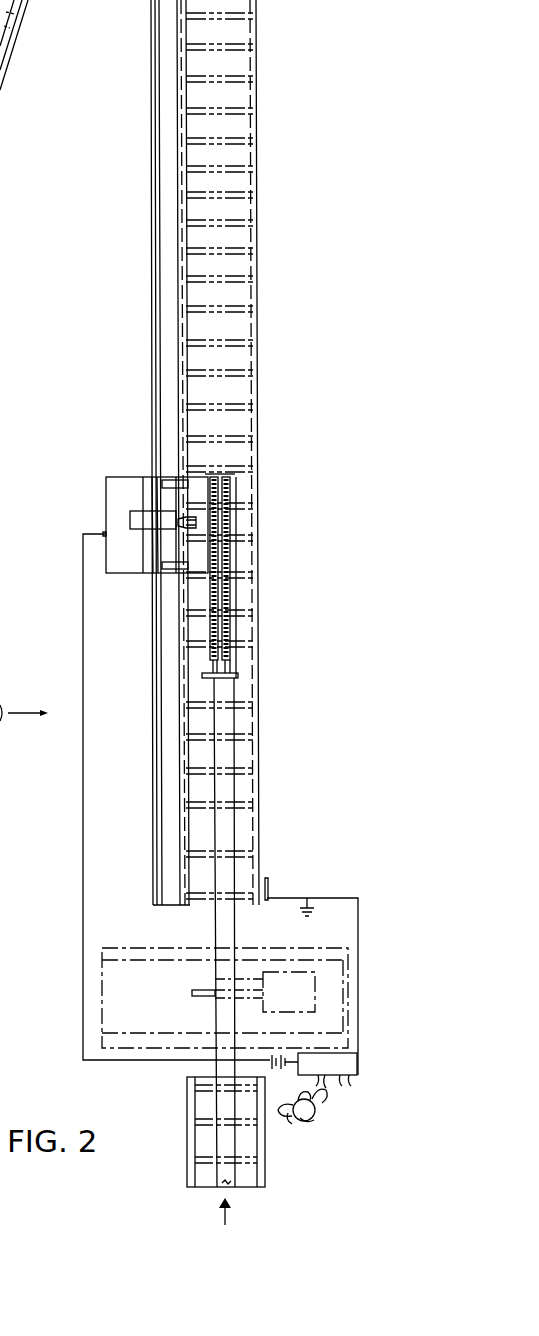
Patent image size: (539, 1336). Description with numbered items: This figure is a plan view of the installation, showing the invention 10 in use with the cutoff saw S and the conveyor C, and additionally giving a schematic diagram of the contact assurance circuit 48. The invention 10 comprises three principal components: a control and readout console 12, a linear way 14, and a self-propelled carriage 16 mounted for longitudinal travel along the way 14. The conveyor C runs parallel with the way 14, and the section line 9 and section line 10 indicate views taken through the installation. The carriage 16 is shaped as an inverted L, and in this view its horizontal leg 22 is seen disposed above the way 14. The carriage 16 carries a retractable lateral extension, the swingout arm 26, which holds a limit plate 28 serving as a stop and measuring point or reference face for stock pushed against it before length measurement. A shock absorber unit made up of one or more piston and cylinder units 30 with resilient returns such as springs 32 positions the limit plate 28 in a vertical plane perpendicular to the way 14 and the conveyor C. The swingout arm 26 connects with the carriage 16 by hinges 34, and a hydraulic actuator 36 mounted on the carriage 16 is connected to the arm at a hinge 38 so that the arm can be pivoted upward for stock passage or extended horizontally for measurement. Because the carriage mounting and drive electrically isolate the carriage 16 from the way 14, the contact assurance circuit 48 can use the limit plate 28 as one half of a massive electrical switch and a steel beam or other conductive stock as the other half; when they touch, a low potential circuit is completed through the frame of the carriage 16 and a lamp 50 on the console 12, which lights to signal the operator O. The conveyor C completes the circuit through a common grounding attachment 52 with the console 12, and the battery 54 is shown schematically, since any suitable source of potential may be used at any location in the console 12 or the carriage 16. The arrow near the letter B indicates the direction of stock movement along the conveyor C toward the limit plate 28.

The section line 9- 9 is at (128, 942).
The invention 10 is at (77, 485).
The control and readout console 12 is at (360, 1077).
The linear way 14 is at (150, 773).
The self-propelled carriage 16 is at (125, 468).
The leg 22 is at (152, 480).
The swingout arm 26 is at (210, 470).
The limit plate 28 is at (238, 674).
The piston and cylinder units 30 is at (230, 556).
The springs 32 is at (230, 532).
The hinges 34 is at (176, 479).
The hydraulic actuator 36 is at (163, 520).
The hinge 38 is at (197, 522).
The contact assurance circuit 48 is at (78, 999).
The lamp 50 is at (337, 1077).
The grounding attachment 52 is at (307, 898).
The battery 54 is at (272, 1070).
The conveyor belt B is at (233, 822).
The conveyor C is at (260, 372).
The operator hand O is at (303, 1122).
The cutoff saw S is at (192, 992).